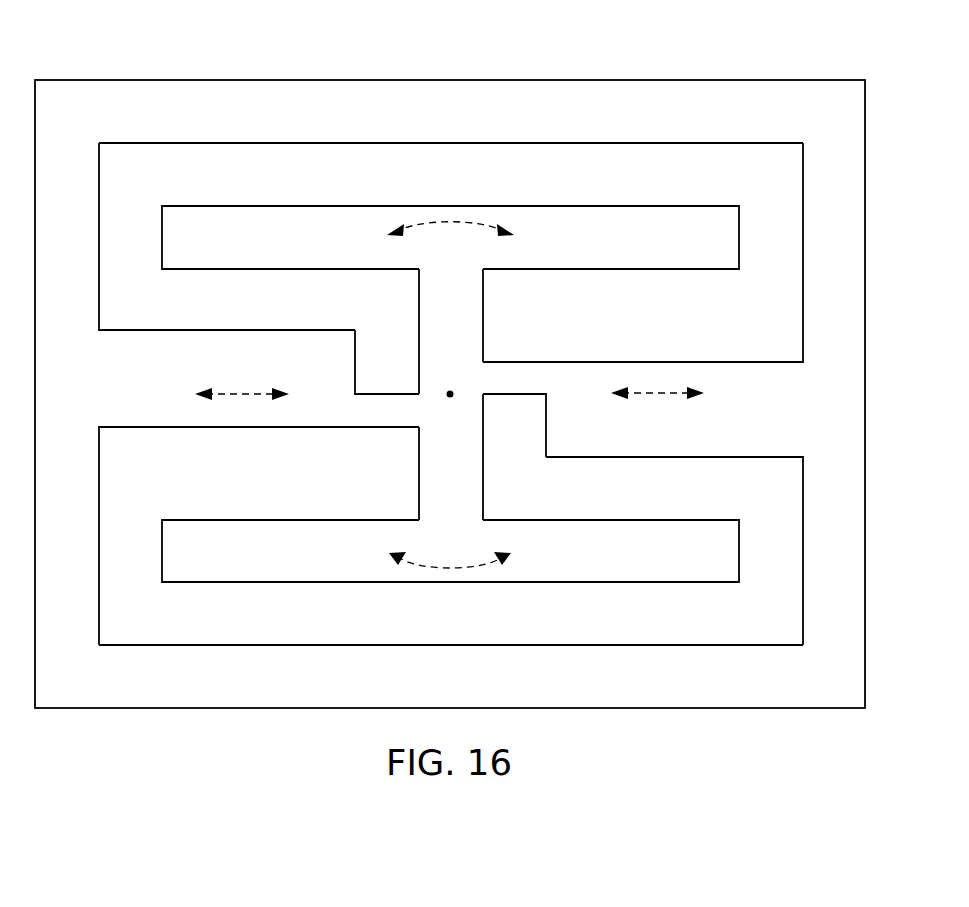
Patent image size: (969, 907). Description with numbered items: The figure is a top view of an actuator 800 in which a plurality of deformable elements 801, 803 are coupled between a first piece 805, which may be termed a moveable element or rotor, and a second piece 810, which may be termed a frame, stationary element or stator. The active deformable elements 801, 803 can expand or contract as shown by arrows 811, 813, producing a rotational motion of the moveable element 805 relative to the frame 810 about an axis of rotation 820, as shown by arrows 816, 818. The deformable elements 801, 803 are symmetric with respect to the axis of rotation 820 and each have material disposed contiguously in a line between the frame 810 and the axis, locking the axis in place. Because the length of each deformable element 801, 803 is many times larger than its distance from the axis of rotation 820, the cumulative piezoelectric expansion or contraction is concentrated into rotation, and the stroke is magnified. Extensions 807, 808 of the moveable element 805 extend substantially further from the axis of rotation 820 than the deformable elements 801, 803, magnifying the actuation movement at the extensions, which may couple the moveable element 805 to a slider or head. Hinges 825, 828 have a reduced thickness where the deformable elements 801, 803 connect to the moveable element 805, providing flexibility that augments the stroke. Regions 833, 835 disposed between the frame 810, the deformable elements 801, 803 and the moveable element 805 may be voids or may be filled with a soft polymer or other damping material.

The actuator 800 is at (117, 38).
The deformable element 801 is at (451, 548).
The deformable element 803 is at (451, 240).
The first piece 805 is at (418, 293).
The extension 807 is at (608, 206).
The extension 808 is at (293, 583).
The second piece 810 is at (768, 80).
The arrow 811 is at (243, 391).
The arrow 813 is at (655, 398).
The arrow 816 is at (448, 219).
The arrow 818 is at (450, 568).
The axis of rotation 820 is at (453, 384).
The hinge 825 is at (385, 394).
The hinge 828 is at (517, 395).
The region 833 is at (257, 143).
The region 835 is at (645, 645).